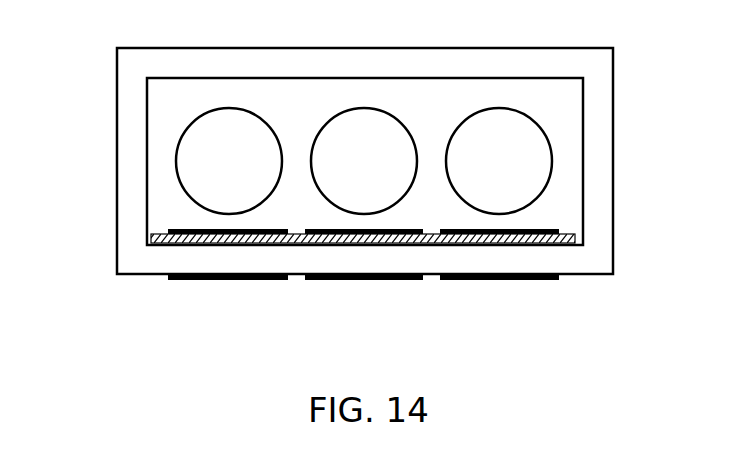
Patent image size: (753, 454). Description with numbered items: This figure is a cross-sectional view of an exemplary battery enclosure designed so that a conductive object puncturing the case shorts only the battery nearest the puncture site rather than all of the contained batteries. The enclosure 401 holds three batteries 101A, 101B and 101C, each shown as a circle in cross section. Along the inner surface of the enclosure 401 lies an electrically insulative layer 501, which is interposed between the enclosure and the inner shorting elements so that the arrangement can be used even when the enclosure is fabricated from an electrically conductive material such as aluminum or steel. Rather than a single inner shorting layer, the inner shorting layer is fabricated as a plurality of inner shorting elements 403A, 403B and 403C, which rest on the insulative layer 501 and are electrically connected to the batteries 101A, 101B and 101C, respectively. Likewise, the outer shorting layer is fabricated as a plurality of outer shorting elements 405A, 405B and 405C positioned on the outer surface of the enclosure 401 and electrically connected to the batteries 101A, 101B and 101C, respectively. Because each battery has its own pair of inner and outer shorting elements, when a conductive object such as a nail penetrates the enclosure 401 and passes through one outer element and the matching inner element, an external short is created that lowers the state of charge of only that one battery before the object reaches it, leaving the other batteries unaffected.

The enclosure 401 is at (132, 146).
The battery 101A is at (201, 171).
The battery 101B is at (336, 171).
The battery 101C is at (471, 171).
The inner shorting element 403A is at (177, 229).
The inner shorting element 403B is at (390, 229).
The inner shorting element 403C is at (535, 229).
The outer shorting element 405A is at (197, 279).
The outer shorting element 405B is at (327, 279).
The outer shorting element 405C is at (460, 279).
The electrically insulative layer 501 is at (147, 237).